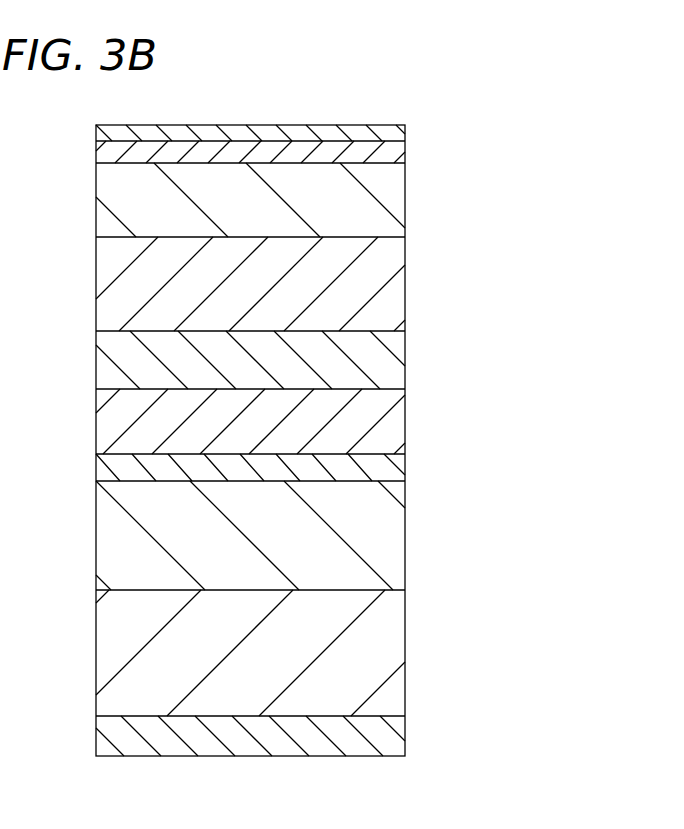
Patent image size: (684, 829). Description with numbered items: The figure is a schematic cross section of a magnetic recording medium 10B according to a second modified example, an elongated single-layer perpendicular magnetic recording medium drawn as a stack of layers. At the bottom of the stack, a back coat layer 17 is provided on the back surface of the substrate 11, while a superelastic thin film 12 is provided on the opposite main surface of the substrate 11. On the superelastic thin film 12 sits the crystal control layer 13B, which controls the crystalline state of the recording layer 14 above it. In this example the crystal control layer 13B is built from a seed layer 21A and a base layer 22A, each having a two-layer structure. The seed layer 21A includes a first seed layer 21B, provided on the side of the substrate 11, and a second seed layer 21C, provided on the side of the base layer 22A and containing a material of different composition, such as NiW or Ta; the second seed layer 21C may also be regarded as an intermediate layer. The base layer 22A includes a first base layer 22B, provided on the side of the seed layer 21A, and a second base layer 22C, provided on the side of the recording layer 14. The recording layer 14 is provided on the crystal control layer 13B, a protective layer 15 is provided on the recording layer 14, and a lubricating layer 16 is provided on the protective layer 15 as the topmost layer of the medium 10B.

The magnetic recording medium 10B is at (372, 97).
The lubricating layer 16 is at (405, 131).
The protective layer 15 is at (405, 149).
The recording layer 14 is at (392, 198).
The crystal control layer 13B is at (588, 310).
The base layer 22A is at (506, 273).
The second base layer 22C is at (392, 282).
The first base layer 22B is at (392, 356).
The seed layer 21A is at (506, 408).
The second seed layer 21C is at (392, 420).
The first seed layer 21B is at (392, 464).
The superelastic thin film 12 is at (393, 534).
The substrate 11 is at (393, 654).
The back coat layer 17 is at (393, 735).